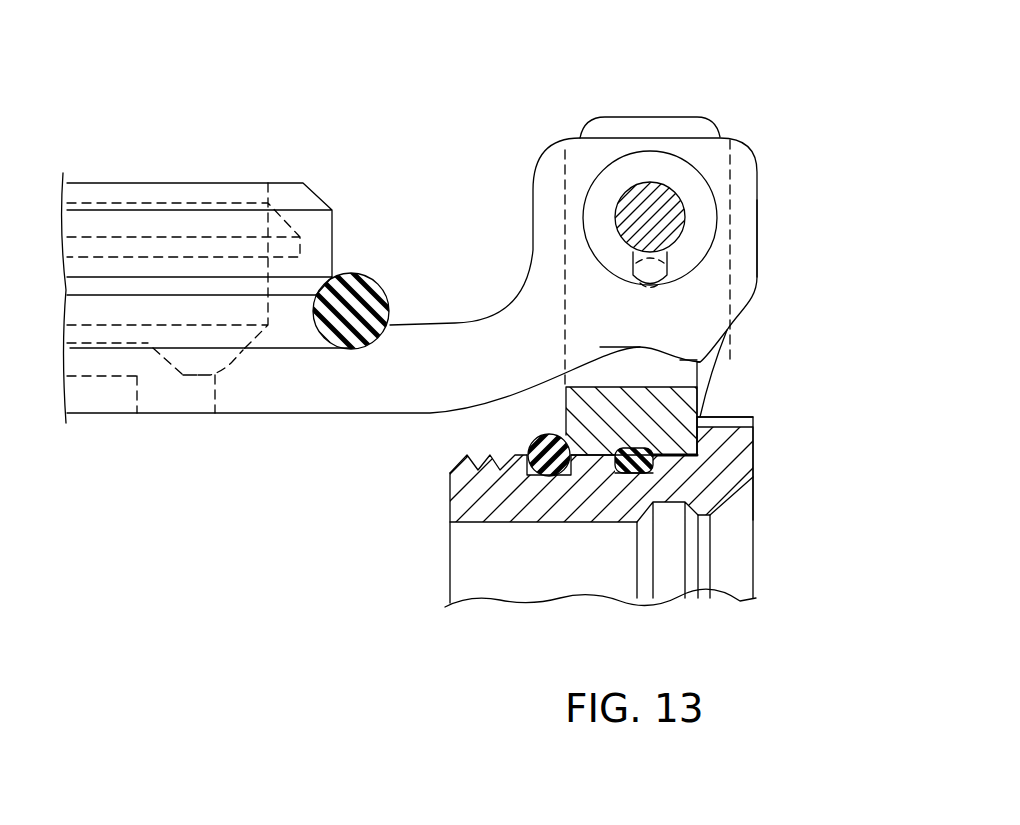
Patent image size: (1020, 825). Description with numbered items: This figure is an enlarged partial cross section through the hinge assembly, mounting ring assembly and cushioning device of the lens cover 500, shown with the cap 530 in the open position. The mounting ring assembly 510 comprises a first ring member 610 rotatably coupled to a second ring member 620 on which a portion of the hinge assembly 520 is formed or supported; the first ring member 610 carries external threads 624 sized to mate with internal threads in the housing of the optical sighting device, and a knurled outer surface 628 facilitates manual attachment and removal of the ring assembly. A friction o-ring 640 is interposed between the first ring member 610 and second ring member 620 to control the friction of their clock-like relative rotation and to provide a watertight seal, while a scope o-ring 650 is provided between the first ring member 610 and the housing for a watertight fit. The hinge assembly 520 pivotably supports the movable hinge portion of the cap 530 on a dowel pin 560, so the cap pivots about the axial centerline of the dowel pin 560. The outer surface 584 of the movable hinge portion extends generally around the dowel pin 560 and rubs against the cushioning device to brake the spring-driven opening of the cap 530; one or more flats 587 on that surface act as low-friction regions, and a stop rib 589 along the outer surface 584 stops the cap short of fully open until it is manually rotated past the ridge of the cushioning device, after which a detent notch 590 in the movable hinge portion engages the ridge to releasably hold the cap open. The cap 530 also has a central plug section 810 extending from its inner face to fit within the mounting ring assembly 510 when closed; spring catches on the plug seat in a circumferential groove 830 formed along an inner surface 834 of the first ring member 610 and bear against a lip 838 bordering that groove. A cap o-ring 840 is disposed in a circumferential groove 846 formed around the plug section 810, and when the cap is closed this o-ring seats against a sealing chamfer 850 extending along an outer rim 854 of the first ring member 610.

The lens cover 500 is at (415, 80).
The mounting ring assembly 510 is at (365, 532).
The hinge assembly 520 is at (757, 103).
The cap 530 is at (260, 400).
The dowel pin 560 is at (660, 215).
The outer surface 584 is at (757, 232).
The flat 587 is at (658, 138).
The stop rib 589 is at (703, 362).
The detent notch 590 is at (639, 354).
The first ring member 610 is at (450, 555).
The second ring member 620 is at (573, 413).
The external threads 624 is at (466, 463).
The knurled outer surface 628 is at (735, 417).
The friction o-ring 640 is at (615, 465).
The scope o-ring 650 is at (537, 437).
The plug section 810 is at (317, 195).
The circumferential groove 830 is at (672, 508).
The inner surface 834 is at (620, 526).
The lip 838 is at (709, 522).
The cap o-ring 840 is at (384, 298).
The circumferential groove 846 is at (376, 290).
The sealing chamfer 850 is at (730, 497).
The outer rim 854 is at (755, 485).